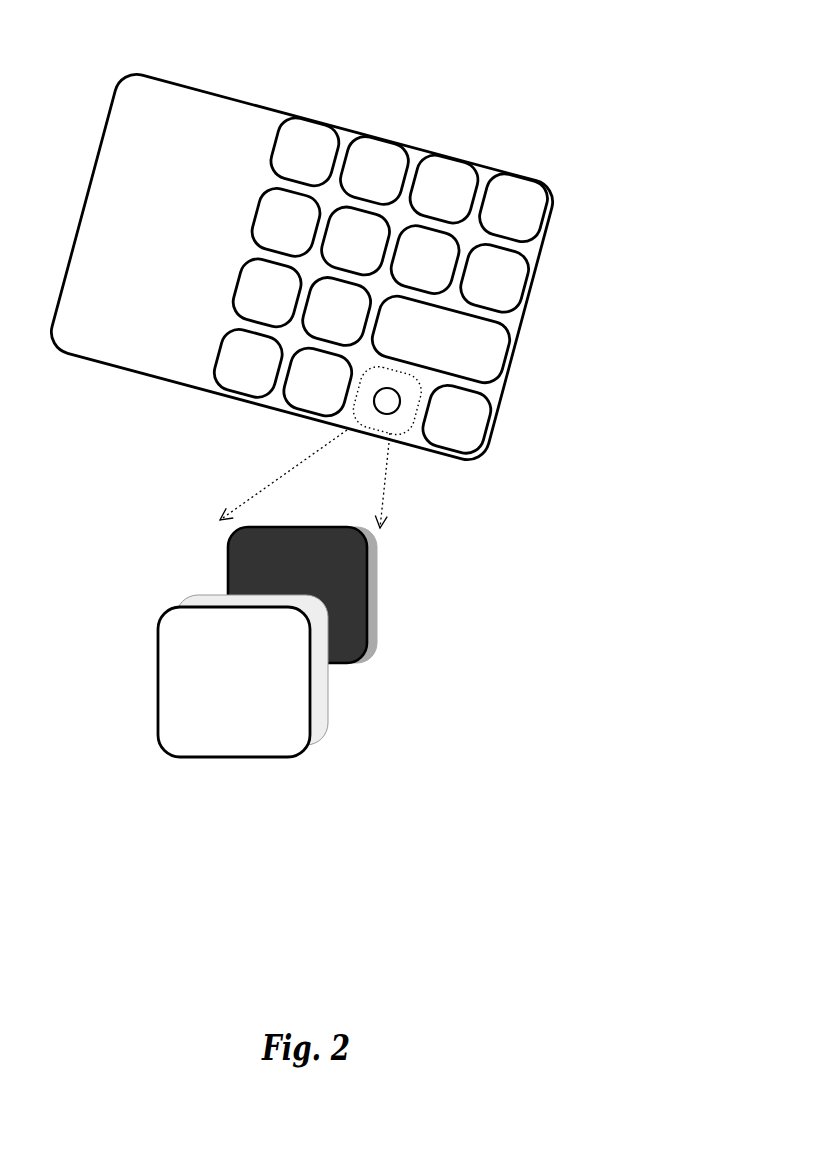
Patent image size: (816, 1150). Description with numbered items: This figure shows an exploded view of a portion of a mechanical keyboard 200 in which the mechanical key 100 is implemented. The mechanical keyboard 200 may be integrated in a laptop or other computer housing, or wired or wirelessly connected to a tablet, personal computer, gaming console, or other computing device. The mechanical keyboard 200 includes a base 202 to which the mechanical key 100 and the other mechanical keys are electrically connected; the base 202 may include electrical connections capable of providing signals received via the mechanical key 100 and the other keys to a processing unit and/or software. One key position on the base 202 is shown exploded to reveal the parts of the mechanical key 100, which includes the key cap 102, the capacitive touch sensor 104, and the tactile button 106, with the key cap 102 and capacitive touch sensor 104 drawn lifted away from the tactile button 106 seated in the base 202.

The mechanical keyboard 200 is at (528, 73).
The base 202 is at (560, 250).
The mechanical key 100 is at (435, 385).
The tactile button 106 is at (407, 423).
The capacitive touch sensor 104 is at (366, 676).
The key cap 102 is at (283, 771).